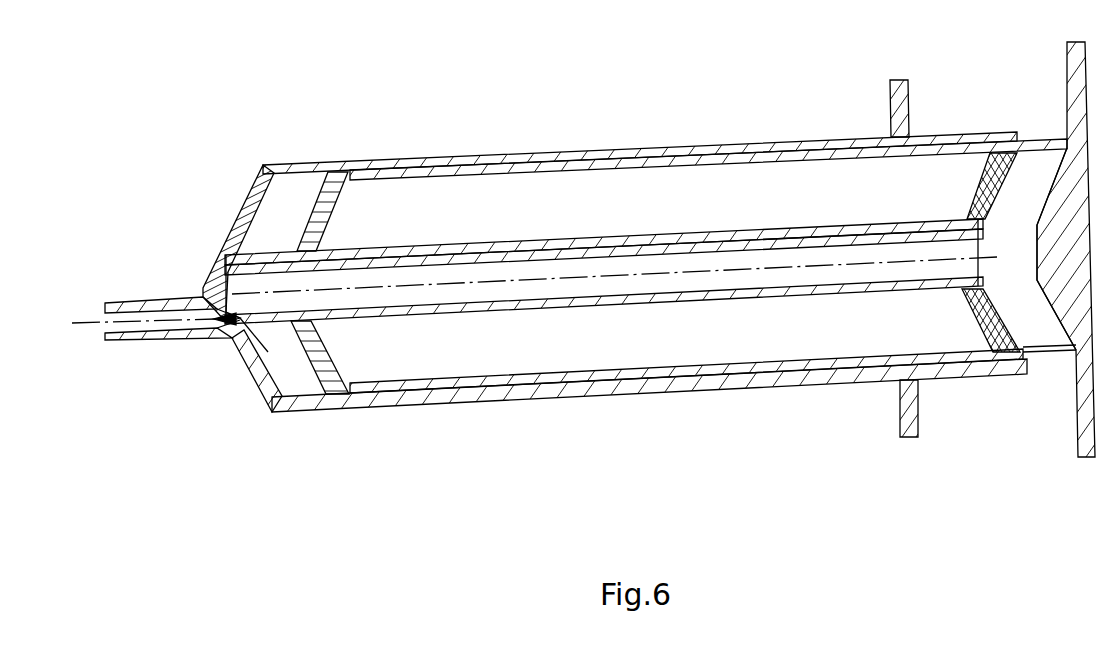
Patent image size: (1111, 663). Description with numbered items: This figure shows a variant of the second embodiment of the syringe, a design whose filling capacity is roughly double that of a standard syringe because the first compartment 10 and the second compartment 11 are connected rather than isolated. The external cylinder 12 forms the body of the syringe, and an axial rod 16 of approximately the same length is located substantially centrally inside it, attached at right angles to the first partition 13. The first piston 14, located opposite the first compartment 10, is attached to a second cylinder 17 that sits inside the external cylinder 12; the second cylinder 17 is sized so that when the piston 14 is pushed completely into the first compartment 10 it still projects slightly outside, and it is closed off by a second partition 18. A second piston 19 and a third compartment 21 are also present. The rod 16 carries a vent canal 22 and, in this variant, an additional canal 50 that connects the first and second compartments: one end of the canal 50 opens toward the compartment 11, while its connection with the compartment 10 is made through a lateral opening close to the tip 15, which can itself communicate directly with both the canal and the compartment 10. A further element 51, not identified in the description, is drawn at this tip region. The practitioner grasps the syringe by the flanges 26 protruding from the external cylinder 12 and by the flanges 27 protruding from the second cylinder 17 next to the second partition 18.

The first compartment 10 is at (642, 236).
The second compartment 11 is at (1025, 180).
The external cylinder 12 is at (540, 156).
The first partition 13 is at (232, 227).
The first piston 14 is at (318, 372).
The tip 15 is at (157, 340).
The axial rod 16 is at (623, 300).
The second cylinder 17 is at (623, 165).
The second partition 18 is at (1065, 297).
The second piston 19 is at (970, 190).
The third compartment 21 is at (452, 200).
The vent canal 22 is at (378, 250).
The flanges 26 is at (890, 107).
The flanges 27 is at (1073, 92).
The canal 50 is at (706, 265).
The valve 51 is at (270, 330).